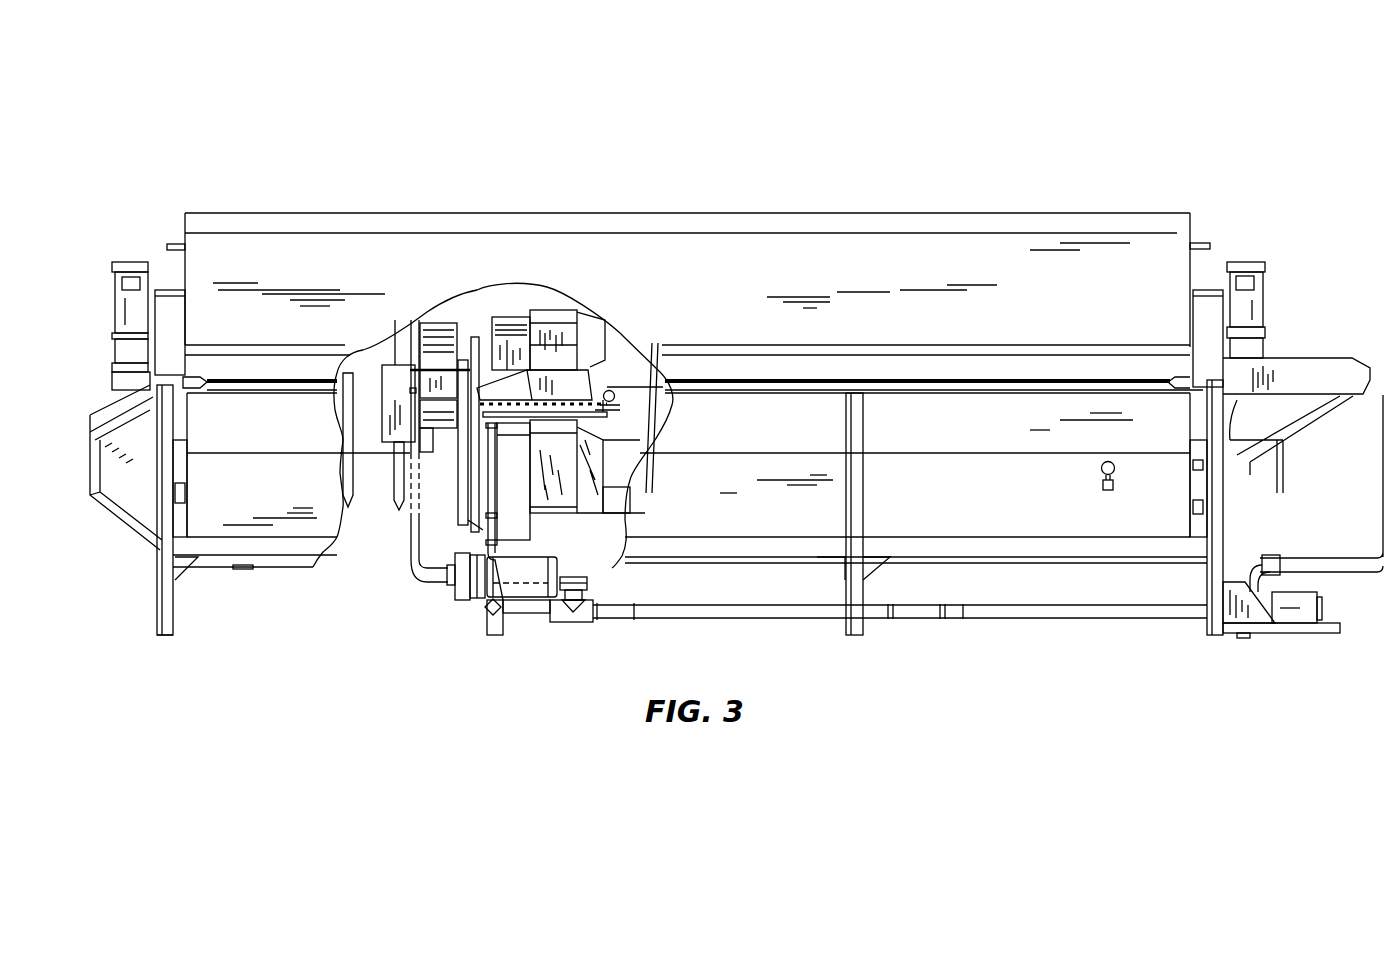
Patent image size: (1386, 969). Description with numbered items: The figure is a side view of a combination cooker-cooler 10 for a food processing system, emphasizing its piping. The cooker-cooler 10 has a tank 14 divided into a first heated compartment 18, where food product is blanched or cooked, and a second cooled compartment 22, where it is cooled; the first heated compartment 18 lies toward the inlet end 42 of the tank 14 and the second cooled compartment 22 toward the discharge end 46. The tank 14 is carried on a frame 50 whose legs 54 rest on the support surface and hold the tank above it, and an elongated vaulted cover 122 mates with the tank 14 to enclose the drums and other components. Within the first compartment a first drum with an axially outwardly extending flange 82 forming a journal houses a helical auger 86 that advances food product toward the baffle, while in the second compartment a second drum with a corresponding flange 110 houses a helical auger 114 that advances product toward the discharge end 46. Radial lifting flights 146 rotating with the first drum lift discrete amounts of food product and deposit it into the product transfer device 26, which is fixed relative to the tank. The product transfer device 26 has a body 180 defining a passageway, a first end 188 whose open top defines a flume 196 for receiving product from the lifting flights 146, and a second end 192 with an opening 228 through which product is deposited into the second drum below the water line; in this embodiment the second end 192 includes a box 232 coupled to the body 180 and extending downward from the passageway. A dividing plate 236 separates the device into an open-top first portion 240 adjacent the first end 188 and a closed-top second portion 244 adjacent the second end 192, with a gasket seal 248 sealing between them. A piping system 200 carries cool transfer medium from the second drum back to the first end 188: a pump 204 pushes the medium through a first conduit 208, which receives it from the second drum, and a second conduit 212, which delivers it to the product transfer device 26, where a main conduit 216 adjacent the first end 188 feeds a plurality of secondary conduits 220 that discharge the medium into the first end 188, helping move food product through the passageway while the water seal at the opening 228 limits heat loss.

The combination cooker-cooler 10 is at (305, 105).
The tank 14 is at (973, 498).
The first heated compartment 18 is at (597, 543).
The second cooled compartment 22 is at (333, 543).
The product transfer device 26 is at (440, 323).
The inlet end 42 is at (1227, 323).
The discharge end 46 is at (110, 333).
The frame 50 is at (167, 637).
The legs 54 is at (163, 600).
The axially outwardly extending flange 82 is at (515, 310).
The helical auger 86 is at (650, 433).
The axially outwardly extending flange 110 is at (414, 320).
The helical auger 114 is at (345, 452).
The elongated vaulted cover 122 is at (773, 258).
The radial lifting flights 146 is at (553, 308).
The body 180 is at (506, 317).
The first end 188 is at (597, 387).
The second end 192 is at (397, 370).
The flume 196 is at (550, 373).
The piping system 200 is at (467, 613).
The pump 204 is at (523, 580).
The first conduit 208 is at (410, 575).
The second conduit 212 is at (490, 493).
The main conduit 216 is at (620, 396).
The secondary conduits 220 is at (606, 405).
The opening 228 is at (340, 484).
The box 232 is at (382, 400).
The dividing plate 236 is at (448, 323).
The first portion 240 is at (540, 405).
The second portion 244 is at (462, 385).
The gasket seal 248 is at (493, 320).